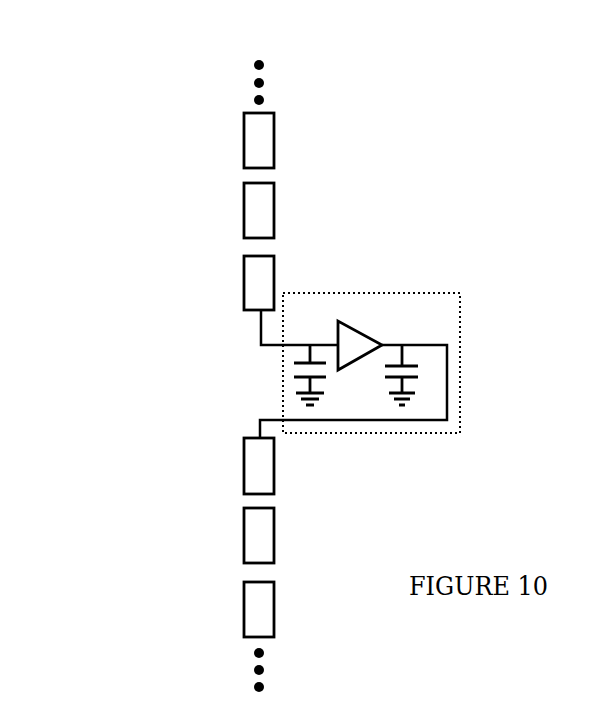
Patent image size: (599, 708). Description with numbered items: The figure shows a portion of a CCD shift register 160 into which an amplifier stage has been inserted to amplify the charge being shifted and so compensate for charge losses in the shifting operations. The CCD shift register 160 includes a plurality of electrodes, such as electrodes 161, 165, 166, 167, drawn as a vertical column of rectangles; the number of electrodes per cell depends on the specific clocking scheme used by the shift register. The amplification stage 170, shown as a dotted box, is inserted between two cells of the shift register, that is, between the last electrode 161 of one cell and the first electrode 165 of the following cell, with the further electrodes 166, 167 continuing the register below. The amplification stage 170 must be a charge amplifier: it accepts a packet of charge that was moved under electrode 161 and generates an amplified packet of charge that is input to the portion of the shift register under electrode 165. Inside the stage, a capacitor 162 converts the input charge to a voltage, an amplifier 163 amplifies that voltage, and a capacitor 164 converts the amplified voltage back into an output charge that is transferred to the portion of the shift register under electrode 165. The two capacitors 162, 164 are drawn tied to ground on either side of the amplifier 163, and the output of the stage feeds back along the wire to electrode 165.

The CCD shift register 160 is at (63, 70).
The electrode 161 is at (268, 268).
The capacitor 162 is at (300, 380).
The amplifier 163 is at (350, 335).
The capacitor 164 is at (413, 355).
The electrode 165 is at (267, 463).
The electrode 166 is at (267, 548).
The electrode 167 is at (267, 617).
The amplification stage 170 is at (462, 313).